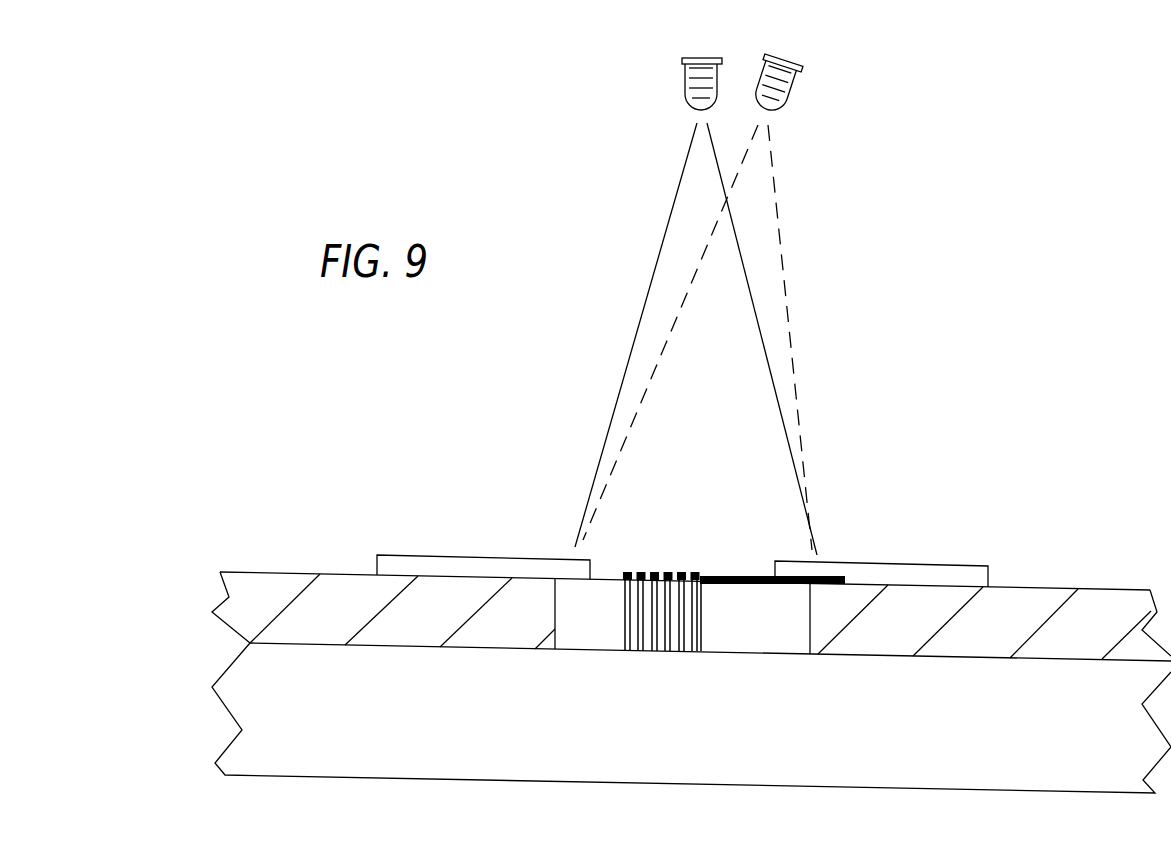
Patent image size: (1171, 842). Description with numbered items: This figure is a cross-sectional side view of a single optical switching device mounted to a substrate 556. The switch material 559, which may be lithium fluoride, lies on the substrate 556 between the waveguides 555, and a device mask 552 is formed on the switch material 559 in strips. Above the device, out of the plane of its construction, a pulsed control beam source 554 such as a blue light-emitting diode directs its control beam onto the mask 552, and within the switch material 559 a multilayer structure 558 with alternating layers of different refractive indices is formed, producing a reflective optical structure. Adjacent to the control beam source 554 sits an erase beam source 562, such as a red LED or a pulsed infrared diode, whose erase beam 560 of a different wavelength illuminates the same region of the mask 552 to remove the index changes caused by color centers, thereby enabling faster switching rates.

The device mask 552 is at (733, 568).
The control beam optical pulsed source 554 is at (701, 57).
The waveguides 555 is at (290, 573).
The substrate 556 is at (355, 778).
The multilayer structure 558 is at (654, 660).
The switch material 559 is at (585, 652).
The erase beam 560 is at (795, 392).
The erase beam source 562 is at (788, 57).